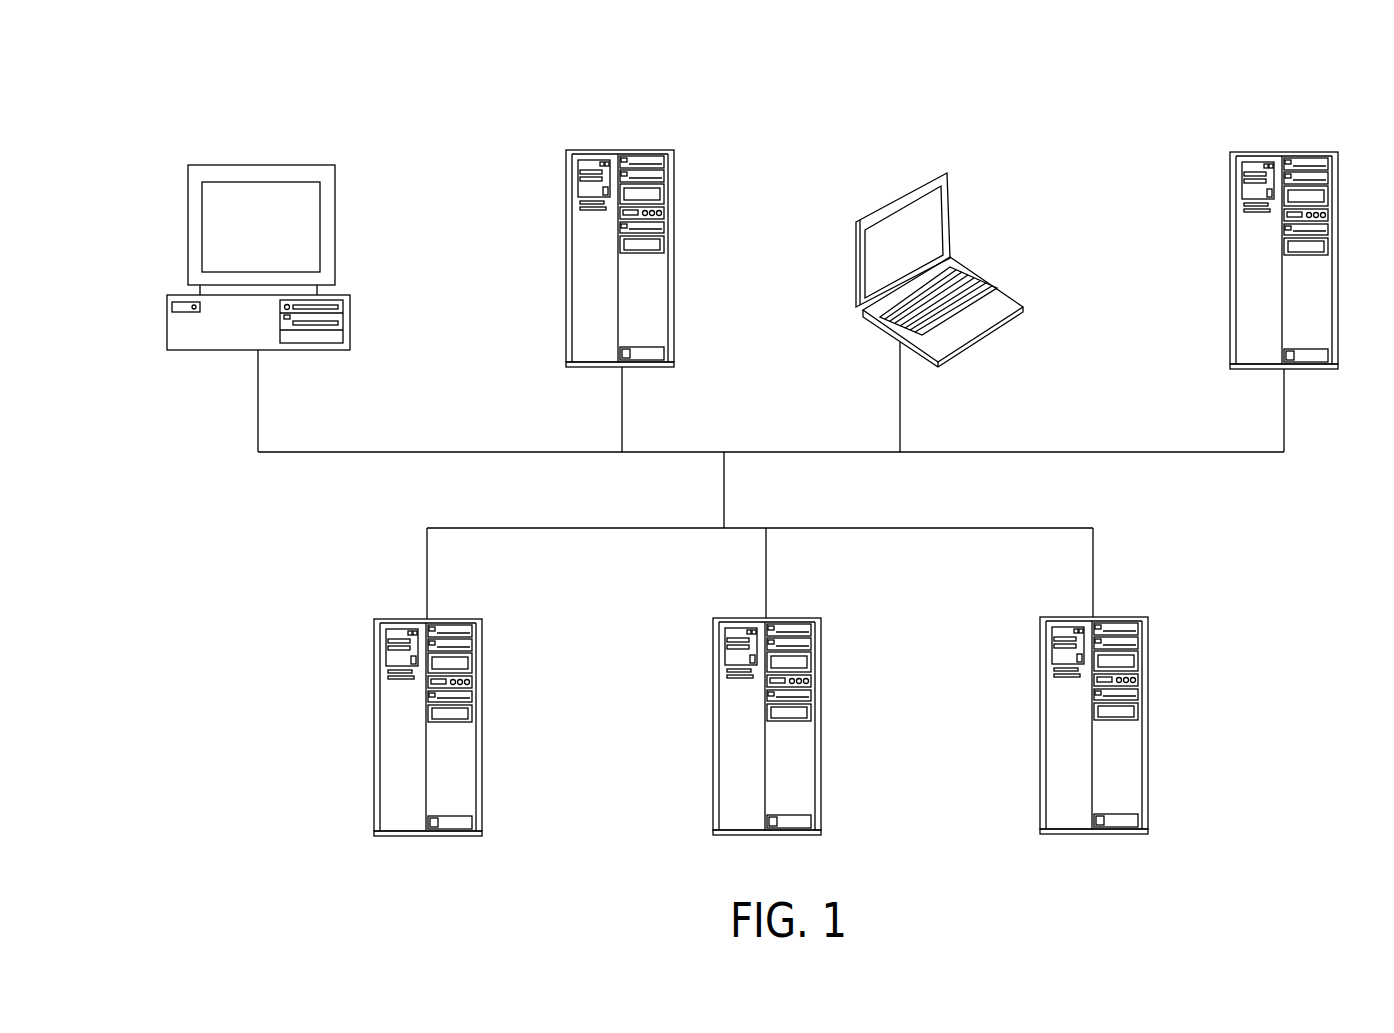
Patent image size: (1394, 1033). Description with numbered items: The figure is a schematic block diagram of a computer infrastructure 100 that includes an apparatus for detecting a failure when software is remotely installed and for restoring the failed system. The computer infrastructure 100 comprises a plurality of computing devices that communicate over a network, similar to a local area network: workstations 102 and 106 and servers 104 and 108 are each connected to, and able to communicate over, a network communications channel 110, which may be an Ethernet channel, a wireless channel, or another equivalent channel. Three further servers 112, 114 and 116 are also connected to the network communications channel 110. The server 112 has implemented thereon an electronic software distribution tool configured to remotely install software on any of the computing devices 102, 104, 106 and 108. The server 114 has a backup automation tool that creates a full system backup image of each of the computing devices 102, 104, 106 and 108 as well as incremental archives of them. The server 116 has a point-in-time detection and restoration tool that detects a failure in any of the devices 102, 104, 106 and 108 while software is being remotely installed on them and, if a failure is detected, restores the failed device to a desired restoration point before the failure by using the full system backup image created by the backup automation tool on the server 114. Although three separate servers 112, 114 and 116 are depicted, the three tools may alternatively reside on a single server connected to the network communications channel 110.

The computer infrastructure 100 is at (226, 82).
The workstation 102 is at (335, 234).
The server 104 is at (675, 198).
The workstation 106 is at (950, 217).
The server 108 is at (1230, 257).
The network communications channel 110 is at (1140, 452).
The server 112 is at (482, 725).
The server 114 is at (822, 725).
The server 116 is at (1148, 714).